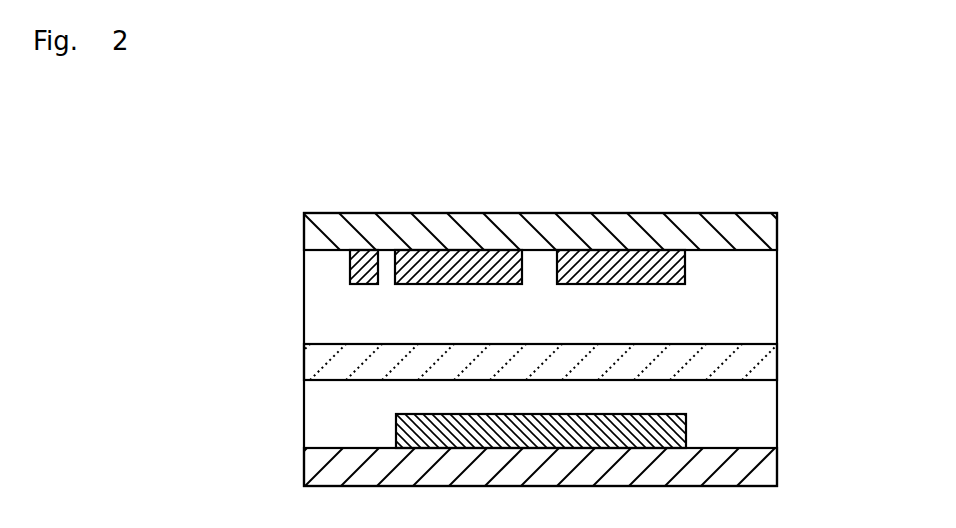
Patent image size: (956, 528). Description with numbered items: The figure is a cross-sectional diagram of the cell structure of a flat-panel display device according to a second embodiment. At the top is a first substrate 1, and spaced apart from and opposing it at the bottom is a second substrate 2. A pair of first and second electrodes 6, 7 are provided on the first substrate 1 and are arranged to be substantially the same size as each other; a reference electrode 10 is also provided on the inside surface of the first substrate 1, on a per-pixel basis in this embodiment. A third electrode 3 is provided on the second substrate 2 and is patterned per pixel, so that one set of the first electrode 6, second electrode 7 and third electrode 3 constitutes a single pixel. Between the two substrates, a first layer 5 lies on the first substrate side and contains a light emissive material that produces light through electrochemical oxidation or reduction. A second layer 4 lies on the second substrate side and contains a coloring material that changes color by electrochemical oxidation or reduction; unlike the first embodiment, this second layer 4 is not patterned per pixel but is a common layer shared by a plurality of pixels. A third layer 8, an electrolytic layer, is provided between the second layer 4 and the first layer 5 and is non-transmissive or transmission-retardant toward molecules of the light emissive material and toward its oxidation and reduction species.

The first substrate 1 is at (753, 237).
The second substrate 2 is at (752, 457).
The third electrode 3 is at (397, 435).
The second layer 4 is at (332, 394).
The first layer 5 is at (753, 297).
The first electrode 6 is at (465, 262).
The second electrode 7 is at (630, 262).
The third layer 8 is at (748, 362).
The reference electrode 10 is at (366, 265).